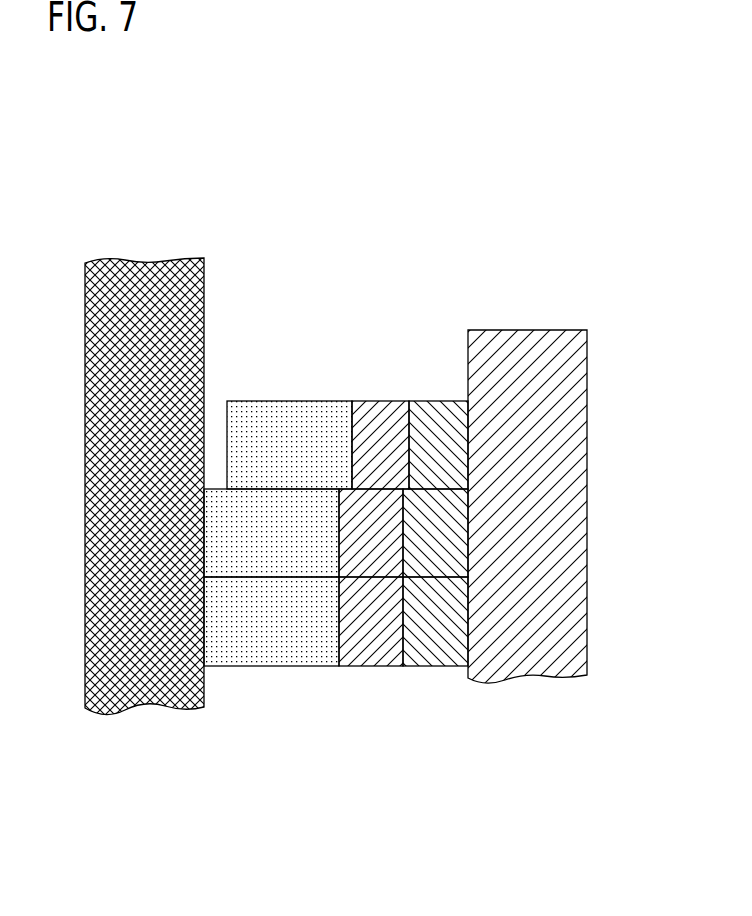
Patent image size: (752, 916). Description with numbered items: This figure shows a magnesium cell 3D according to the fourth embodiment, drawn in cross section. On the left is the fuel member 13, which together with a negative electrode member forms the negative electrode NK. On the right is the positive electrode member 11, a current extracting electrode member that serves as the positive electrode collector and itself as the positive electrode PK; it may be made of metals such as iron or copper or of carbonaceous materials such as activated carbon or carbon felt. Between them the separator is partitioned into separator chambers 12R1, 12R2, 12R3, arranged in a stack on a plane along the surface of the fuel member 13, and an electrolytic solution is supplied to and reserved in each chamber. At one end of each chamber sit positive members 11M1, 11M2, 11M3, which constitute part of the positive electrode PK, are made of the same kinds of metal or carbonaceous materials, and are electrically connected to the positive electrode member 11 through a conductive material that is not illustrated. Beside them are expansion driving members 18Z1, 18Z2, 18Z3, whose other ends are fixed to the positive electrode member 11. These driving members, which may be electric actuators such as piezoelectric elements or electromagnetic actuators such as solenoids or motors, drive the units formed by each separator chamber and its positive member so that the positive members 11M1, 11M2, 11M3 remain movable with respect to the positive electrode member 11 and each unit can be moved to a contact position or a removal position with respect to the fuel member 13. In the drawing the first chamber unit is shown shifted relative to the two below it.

The magnesium cell 3D is at (322, 142).
The fuel member 13 is at (148, 277).
The positive electrode member 11 is at (545, 338).
The positive member 11M1 is at (362, 412).
The positive member 11M2 is at (380, 560).
The positive member 11M3 is at (350, 660).
The separator chamber 12R1 is at (274, 411).
The separator chamber 12R2 is at (280, 566).
The separator chamber 12R3 is at (227, 654).
The expansion driving member 18Z1 is at (437, 411).
The expansion driving member 18Z2 is at (442, 562).
The expansion driving member 18Z3 is at (426, 667).